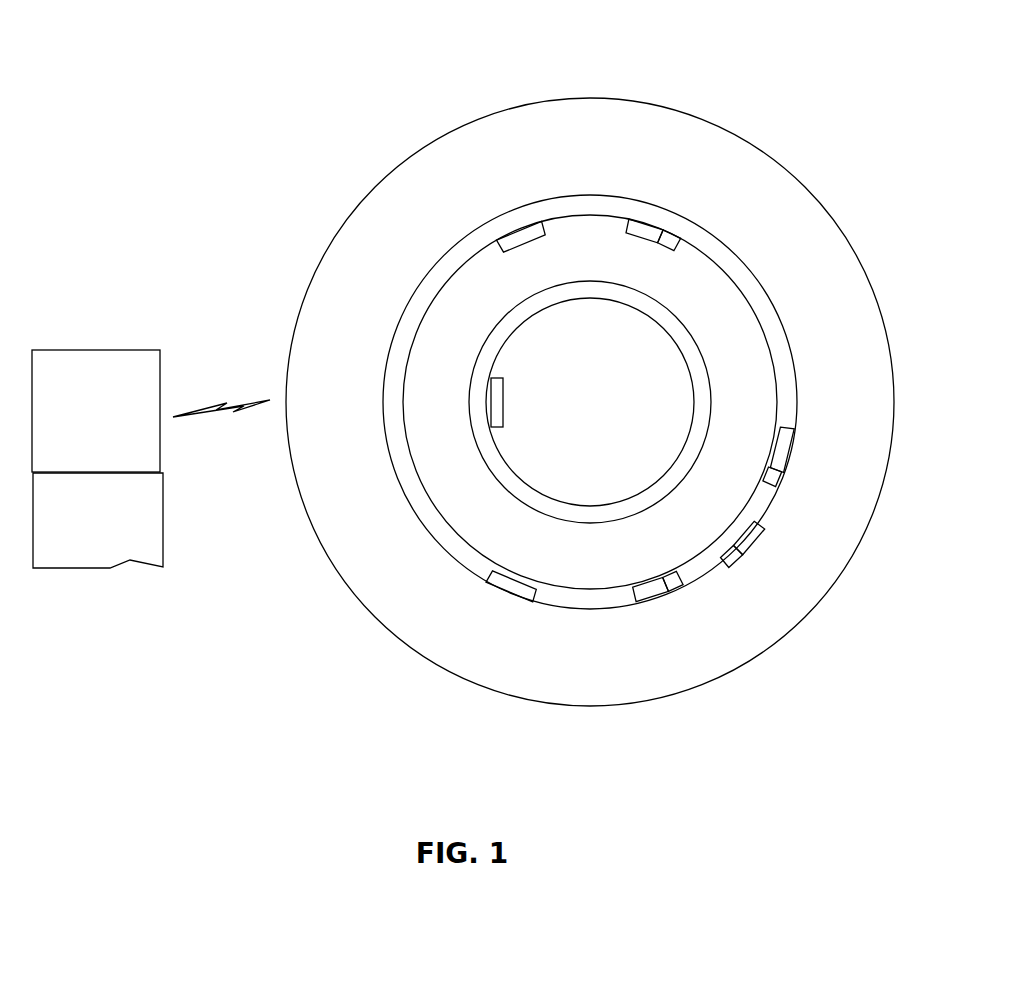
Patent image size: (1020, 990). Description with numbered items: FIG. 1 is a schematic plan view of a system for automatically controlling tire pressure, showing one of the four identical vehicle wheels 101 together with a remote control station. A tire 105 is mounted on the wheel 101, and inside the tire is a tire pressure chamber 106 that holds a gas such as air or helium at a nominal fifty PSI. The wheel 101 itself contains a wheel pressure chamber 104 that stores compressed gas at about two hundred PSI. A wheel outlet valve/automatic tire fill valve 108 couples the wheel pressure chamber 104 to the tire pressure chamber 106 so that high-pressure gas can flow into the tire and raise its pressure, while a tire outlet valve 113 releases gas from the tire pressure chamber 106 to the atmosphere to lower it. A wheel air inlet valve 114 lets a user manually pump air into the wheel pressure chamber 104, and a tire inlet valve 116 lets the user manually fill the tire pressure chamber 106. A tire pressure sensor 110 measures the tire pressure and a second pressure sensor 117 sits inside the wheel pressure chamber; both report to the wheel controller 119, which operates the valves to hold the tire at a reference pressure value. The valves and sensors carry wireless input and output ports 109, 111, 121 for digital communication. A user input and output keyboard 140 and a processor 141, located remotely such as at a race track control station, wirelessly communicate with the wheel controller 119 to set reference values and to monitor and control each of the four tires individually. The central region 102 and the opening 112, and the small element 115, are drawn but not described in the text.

The wheel 101 is at (524, 198).
The inner ring member 102 is at (590, 302).
The wheel pressure chamber 104 is at (735, 377).
The tire 105 is at (591, 97).
The tire pressure chamber 106 is at (684, 155).
The wheel outlet valve/automatic tire fill valve 108 is at (792, 426).
The wireless input and output 109 is at (782, 474).
The tire pressure sensor 110 is at (760, 528).
The wireless input and output 111 is at (733, 557).
The central opening 112 is at (584, 470).
The tire outlet valve 113 is at (640, 593).
The wheel air inlet valve 114 is at (494, 405).
The connector 115 is at (673, 584).
The tire inlet valve 116 is at (513, 590).
The second pressure sensor 117 is at (512, 232).
The wheel controller 119 is at (648, 232).
The wireless input and output 121 is at (672, 236).
The user input and output keyboard 140 is at (97, 350).
The processor 141 is at (80, 530).